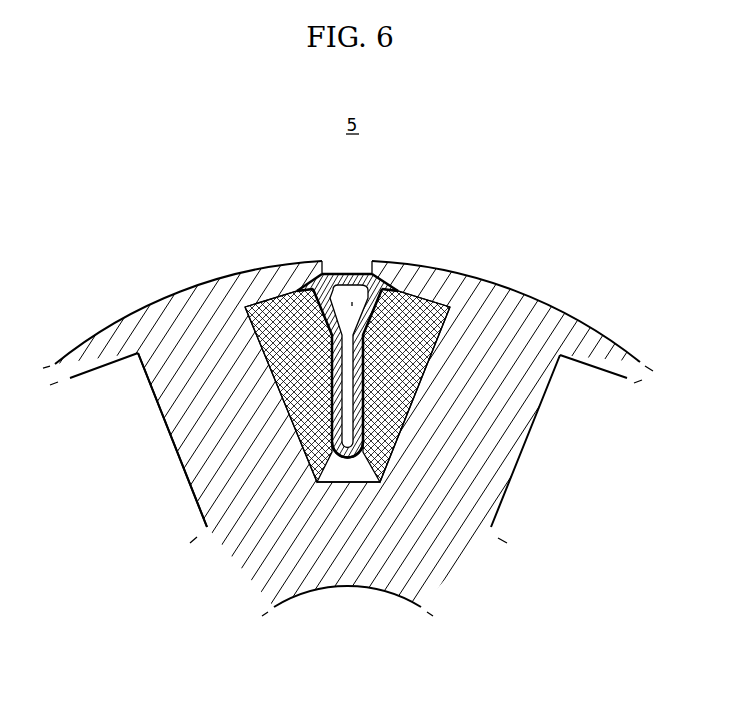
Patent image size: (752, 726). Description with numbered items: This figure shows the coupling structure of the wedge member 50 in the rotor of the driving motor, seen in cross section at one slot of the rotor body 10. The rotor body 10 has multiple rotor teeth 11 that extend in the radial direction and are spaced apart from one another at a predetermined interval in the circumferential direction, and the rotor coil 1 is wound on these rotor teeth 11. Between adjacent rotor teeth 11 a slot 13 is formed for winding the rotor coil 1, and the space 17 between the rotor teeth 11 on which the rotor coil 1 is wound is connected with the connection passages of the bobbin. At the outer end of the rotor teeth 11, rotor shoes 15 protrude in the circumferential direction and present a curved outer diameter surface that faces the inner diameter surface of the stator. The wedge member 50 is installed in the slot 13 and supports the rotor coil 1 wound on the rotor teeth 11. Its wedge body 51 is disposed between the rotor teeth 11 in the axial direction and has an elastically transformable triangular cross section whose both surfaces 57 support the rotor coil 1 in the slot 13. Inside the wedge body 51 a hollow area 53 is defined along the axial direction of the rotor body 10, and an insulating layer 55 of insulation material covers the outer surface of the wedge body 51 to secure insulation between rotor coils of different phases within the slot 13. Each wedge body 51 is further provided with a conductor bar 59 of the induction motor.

The rotor coil 1 is at (352, 304).
The rotor body 10 is at (160, 431).
The rotor teeth 11 is at (193, 463).
The slot 13 is at (348, 468).
The rotor shoes 15 is at (149, 292).
The space 17 is at (310, 287).
The wedge member 50 is at (367, 238).
The wedge body 51 is at (292, 305).
The hollow area 53 is at (399, 289).
The insulating layer 55 is at (365, 368).
The both surfaces 57 is at (405, 440).
The conductor bar 59 is at (340, 306).